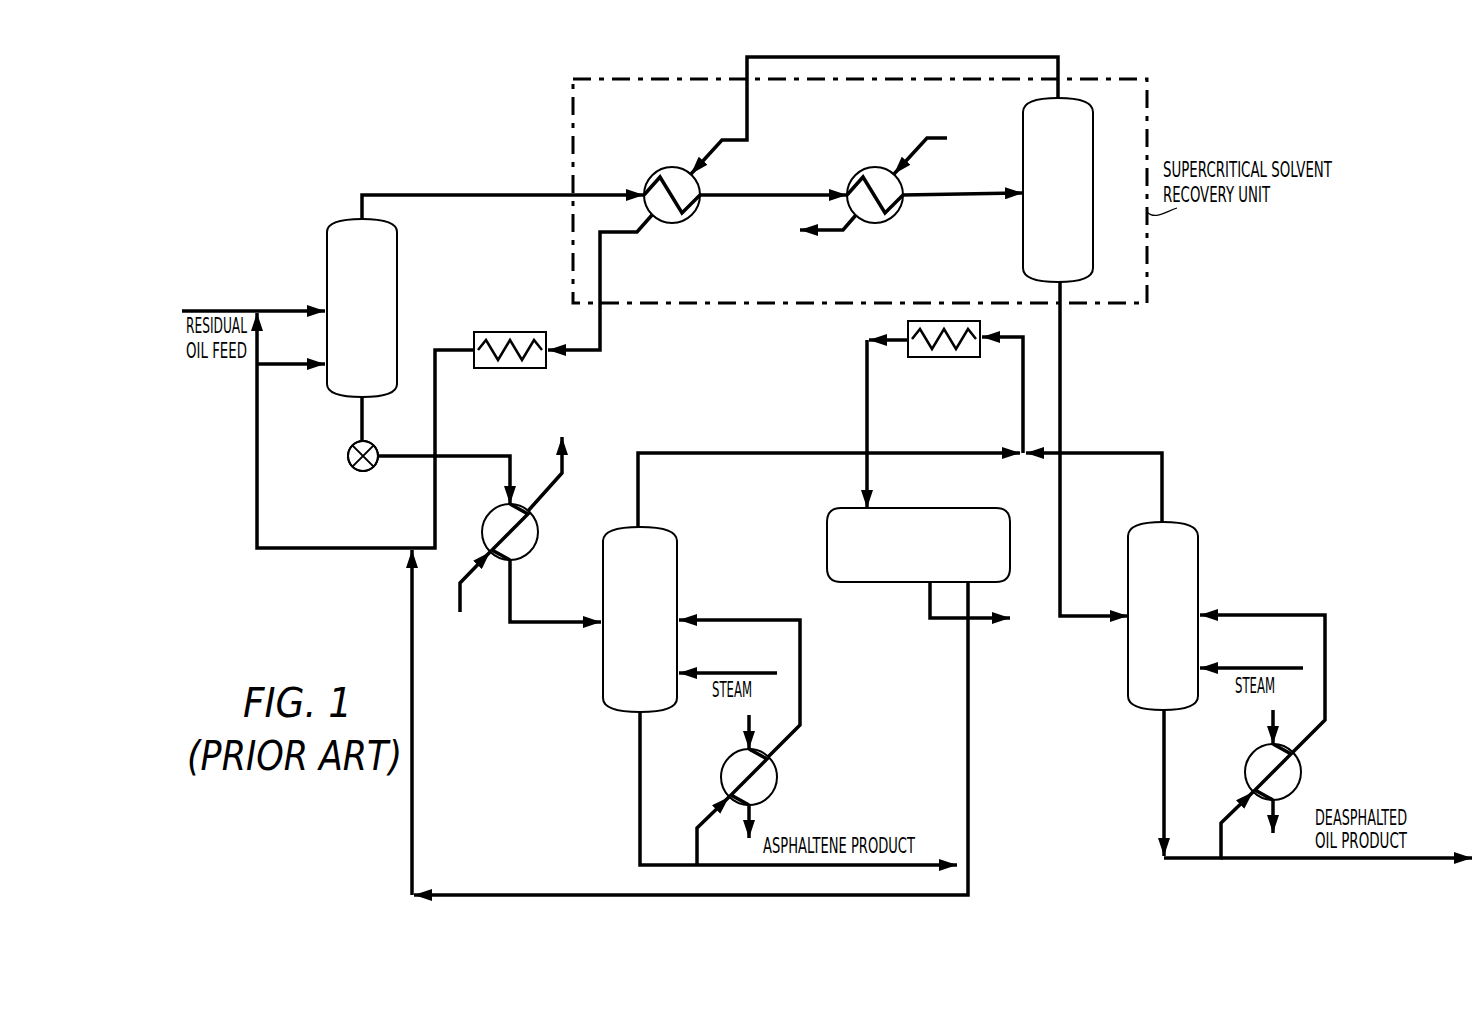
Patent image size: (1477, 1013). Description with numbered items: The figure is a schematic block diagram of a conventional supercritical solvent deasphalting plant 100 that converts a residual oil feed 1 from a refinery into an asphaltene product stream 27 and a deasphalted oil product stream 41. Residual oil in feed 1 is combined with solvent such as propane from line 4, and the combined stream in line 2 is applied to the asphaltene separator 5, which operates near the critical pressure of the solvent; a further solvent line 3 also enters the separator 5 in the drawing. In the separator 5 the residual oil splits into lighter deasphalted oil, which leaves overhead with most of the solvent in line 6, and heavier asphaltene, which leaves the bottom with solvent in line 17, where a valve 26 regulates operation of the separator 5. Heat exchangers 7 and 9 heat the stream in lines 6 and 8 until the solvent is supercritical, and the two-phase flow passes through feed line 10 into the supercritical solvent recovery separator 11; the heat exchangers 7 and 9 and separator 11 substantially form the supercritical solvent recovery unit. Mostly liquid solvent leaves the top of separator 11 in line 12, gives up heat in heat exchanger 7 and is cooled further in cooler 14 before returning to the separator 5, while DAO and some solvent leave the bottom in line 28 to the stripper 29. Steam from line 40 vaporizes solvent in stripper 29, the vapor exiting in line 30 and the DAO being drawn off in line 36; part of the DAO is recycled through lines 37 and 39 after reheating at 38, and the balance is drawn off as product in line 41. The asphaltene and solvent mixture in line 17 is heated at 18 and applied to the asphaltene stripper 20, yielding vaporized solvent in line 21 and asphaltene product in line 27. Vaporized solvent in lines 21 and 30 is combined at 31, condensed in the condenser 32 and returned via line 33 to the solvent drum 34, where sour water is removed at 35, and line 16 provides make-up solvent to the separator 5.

The conventional supercritical solvent deasphalting plant 100 is at (293, 229).
The residual oil feed 1 is at (241, 310).
The line 2 is at (286, 310).
The solvent feed line 3 is at (287, 361).
The line 4 is at (257, 432).
The asphaltene separator 5 is at (397, 262).
The line 6 is at (454, 195).
The heat exchanger 7 is at (672, 167).
The line 8 is at (752, 195).
The heat exchanger 9 is at (877, 167).
The feed line 10 is at (961, 193).
The supercritical solvent recovery separator 11 is at (1023, 118).
The line 12 is at (875, 60).
The cooler 14 is at (501, 332).
The line 16 is at (412, 628).
The line 17 is at (357, 443).
The heater 18 is at (486, 516).
The asphaltene stripper 20 is at (603, 553).
The line 21 is at (709, 453).
The valve 26 is at (365, 471).
The asphaltene product stream 27 is at (928, 863).
The line 28 is at (1060, 347).
The stripper 29 is at (1128, 548).
The line 30 is at (1124, 453).
The combining point 31 is at (1023, 414).
The condenser 32 is at (945, 359).
The condensed solvent line 33 is at (867, 414).
The solvent drum 34 is at (929, 508).
The sour water outlet 35 is at (945, 621).
The line 36 is at (1164, 738).
The line 37 is at (1221, 844).
The reheater 38 is at (1302, 770).
The line 39 is at (1250, 615).
The line 40 is at (1249, 668).
The deasphalted oil product stream 41 is at (1436, 858).